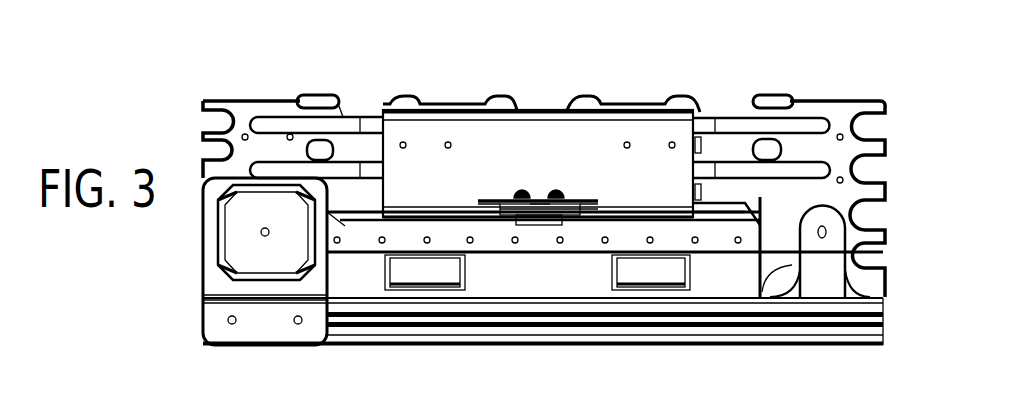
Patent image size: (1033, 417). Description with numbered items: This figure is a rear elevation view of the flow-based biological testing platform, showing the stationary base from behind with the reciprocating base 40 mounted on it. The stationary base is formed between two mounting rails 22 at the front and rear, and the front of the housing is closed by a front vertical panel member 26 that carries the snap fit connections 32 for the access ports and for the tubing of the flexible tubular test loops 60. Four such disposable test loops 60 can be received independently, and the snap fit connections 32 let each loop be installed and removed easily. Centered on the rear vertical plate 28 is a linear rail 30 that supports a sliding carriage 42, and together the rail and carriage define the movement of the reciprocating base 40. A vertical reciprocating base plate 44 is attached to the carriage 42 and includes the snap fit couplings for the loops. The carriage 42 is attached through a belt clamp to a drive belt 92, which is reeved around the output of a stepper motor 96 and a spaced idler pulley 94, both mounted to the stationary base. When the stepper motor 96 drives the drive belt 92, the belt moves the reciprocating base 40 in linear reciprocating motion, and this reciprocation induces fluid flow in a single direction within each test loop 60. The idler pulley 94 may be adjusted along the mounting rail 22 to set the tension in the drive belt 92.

The mounting rail 22 is at (735, 346).
The front vertical panel member 26 is at (280, 115).
The rear vertical plate 28 is at (543, 285).
The linear rail 30 is at (358, 242).
The snap fit connections 32 is at (332, 105).
The reciprocating base 40 is at (545, 108).
The sliding carriage 42 is at (537, 193).
The vertical reciprocating base plate 44 is at (597, 171).
The flexible tubular test loop 60 is at (355, 160).
The drive belt 92 is at (457, 207).
The idler pulley 94 is at (820, 257).
The stepper motor 96 is at (202, 250).